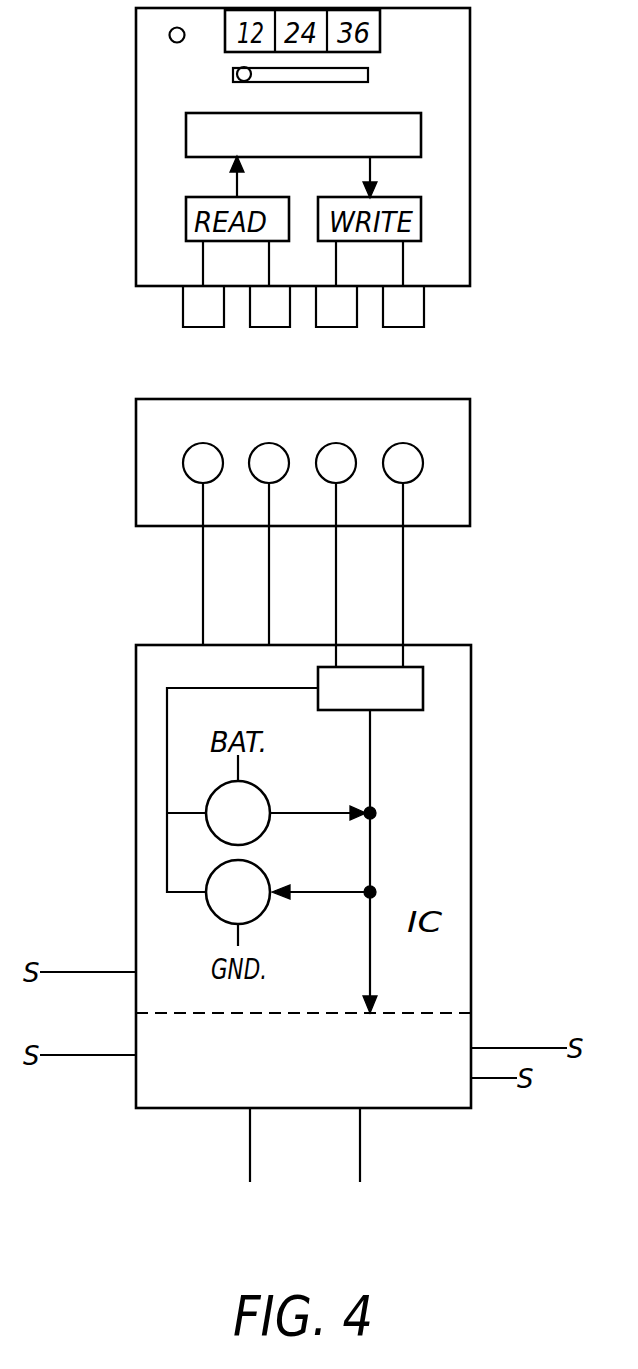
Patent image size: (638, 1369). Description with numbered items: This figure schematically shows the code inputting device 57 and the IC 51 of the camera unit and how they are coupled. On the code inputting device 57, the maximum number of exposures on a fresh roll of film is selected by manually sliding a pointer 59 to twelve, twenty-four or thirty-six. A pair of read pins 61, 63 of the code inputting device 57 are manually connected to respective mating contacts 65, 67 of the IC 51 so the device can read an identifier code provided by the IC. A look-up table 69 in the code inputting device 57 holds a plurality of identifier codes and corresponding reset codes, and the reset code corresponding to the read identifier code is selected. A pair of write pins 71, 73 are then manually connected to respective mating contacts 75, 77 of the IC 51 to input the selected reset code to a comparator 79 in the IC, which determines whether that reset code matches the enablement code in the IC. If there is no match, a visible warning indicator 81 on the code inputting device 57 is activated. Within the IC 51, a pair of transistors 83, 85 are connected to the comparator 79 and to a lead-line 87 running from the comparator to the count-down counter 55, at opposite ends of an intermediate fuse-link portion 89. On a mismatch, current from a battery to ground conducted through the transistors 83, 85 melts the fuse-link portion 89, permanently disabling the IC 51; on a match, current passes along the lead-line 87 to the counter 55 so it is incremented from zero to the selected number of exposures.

The IC 51 is at (136, 703).
The count-down counter 55 is at (163, 1067).
The code inputting device 57 is at (121, 114).
The pointer 59 is at (236, 75).
The read pin 61 is at (192, 329).
The read pin 63 is at (270, 329).
The mating contact 65 is at (201, 442).
The mating contact 67 is at (269, 442).
The look-up table 69 is at (423, 130).
The write pin 71 is at (337, 329).
The write pin 73 is at (398, 329).
The mating contact 75 is at (335, 442).
The mating contact 77 is at (402, 442).
The comparator 79 is at (423, 685).
The visible warning indicator 81 is at (169, 35).
The transistor 83 is at (222, 786).
The transistor 85 is at (215, 868).
The lead-line 87 is at (370, 767).
The fuse-link portion 89 is at (370, 857).